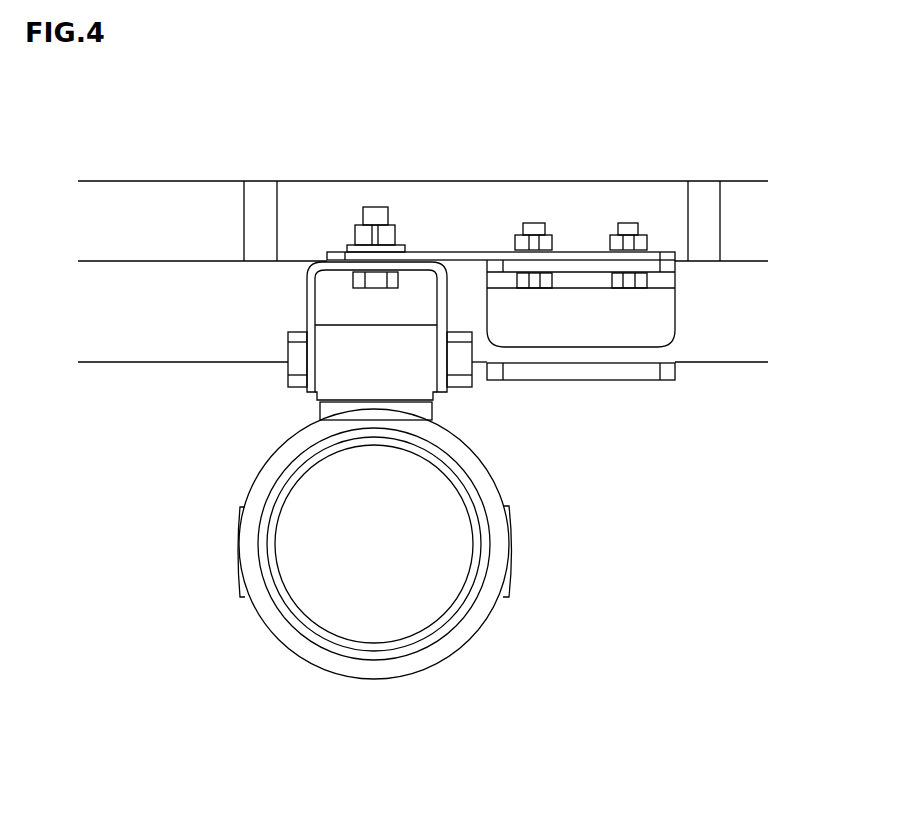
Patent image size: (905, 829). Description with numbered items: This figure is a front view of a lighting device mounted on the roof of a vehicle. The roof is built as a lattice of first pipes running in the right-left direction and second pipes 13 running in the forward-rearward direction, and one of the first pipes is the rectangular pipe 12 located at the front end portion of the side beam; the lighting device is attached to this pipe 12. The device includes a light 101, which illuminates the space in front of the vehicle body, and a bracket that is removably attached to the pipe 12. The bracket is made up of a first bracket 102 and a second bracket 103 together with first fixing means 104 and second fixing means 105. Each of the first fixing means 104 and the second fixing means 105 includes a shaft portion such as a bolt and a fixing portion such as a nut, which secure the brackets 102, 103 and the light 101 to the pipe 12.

The rectangular pipe 12 is at (177, 311).
The second pipes 13 is at (257, 206).
The light 101 is at (375, 567).
The first bracket 102 is at (461, 255).
The second bracket 103 is at (630, 328).
The first fixing means 104 is at (373, 217).
The second fixing means 105 is at (531, 226).